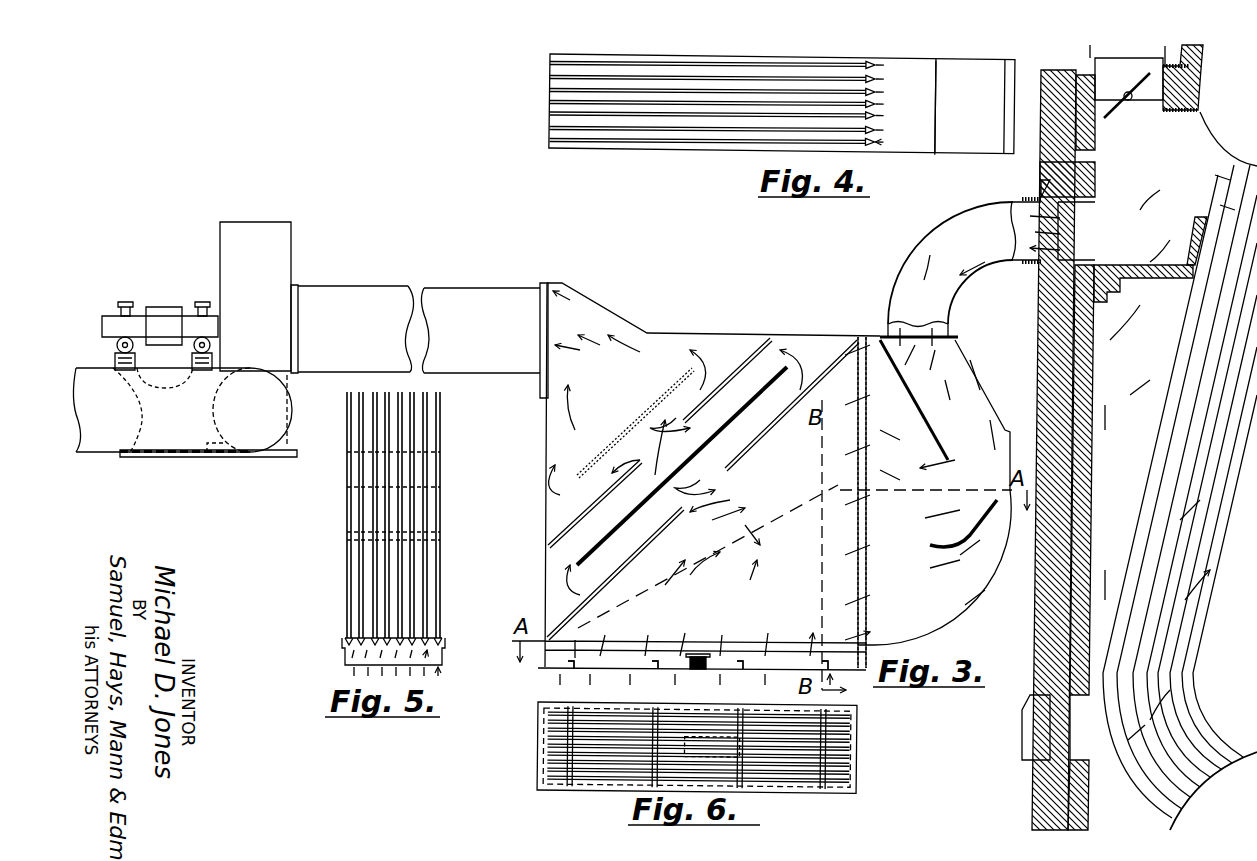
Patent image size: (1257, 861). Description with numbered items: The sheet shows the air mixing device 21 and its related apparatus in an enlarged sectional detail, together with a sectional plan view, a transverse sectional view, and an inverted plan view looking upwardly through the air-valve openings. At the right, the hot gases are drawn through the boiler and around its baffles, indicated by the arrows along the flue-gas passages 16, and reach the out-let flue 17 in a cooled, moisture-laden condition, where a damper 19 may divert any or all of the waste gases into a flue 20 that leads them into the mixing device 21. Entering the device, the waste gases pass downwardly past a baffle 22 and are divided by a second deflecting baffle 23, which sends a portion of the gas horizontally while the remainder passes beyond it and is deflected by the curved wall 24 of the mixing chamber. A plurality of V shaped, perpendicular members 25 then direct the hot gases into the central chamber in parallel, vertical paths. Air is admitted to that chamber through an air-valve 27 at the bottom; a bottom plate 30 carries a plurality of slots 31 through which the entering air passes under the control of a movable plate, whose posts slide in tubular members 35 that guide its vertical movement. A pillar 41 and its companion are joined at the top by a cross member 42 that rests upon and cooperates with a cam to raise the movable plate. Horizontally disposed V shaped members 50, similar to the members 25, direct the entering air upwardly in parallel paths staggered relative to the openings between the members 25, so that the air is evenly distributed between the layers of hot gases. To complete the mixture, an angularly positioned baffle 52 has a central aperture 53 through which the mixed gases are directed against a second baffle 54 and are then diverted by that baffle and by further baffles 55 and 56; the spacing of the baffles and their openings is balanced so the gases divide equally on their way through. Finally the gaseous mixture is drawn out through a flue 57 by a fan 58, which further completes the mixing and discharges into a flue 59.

In FIG. 3, the heated air passages 16 is at (1192, 385).
In FIG. 3, the out-let flue 17 is at (1139, 437).
In FIG. 3, the damper 19 is at (1118, 105).
In FIG. 3, the flue 20 is at (948, 228).
In FIG. 4, the mixing device 21 is at (825, 55).
In FIG. 3, the mixing device 21 is at (730, 335).
In FIG. 3, the baffle 22 is at (903, 372).
In FIG. 4, the second deflecting baffle 23 is at (937, 120).
In FIG. 3, the second deflecting baffle 23 is at (948, 548).
In FIG. 3, the curved wall 24 is at (965, 602).
In FIG. 4, the V shaped perpendicular members 25 is at (884, 103).
In FIG. 5, the V shaped perpendicular members 25 is at (405, 566).
In FIG. 3, the V shaped perpendicular members 25 is at (866, 495).
In FIG. 6, the air-valve 27 is at (540, 766).
In FIG. 3, the air-valve 27 is at (718, 652).
In FIG. 6, the bottom plate 30 is at (550, 748).
In FIG. 6, the slots 31 is at (848, 768).
In FIG. 3, the tubular members 35 is at (652, 660).
In FIG. 3, the pillar 41 is at (683, 652).
In FIG. 3, the cross member 42 is at (688, 654).
In FIG. 4, the V shaped members 50 is at (555, 112).
In FIG. 5, the V shaped members 50 is at (395, 636).
In FIG. 3, the V shaped members 50 is at (776, 652).
In FIG. 3, the angularly positioned baffle 52 is at (798, 420).
In FIG. 3, the central aperture 53 is at (702, 412).
In FIG. 3, the second baffle 54 is at (770, 405).
In FIG. 3, the baffle 55 is at (726, 392).
In FIG. 3, the baffle 56 is at (630, 422).
In FIG. 3, the flue 57 is at (468, 300).
In FIG. 3, the fan 58 is at (280, 245).
In FIG. 3, the flue 59 is at (175, 440).